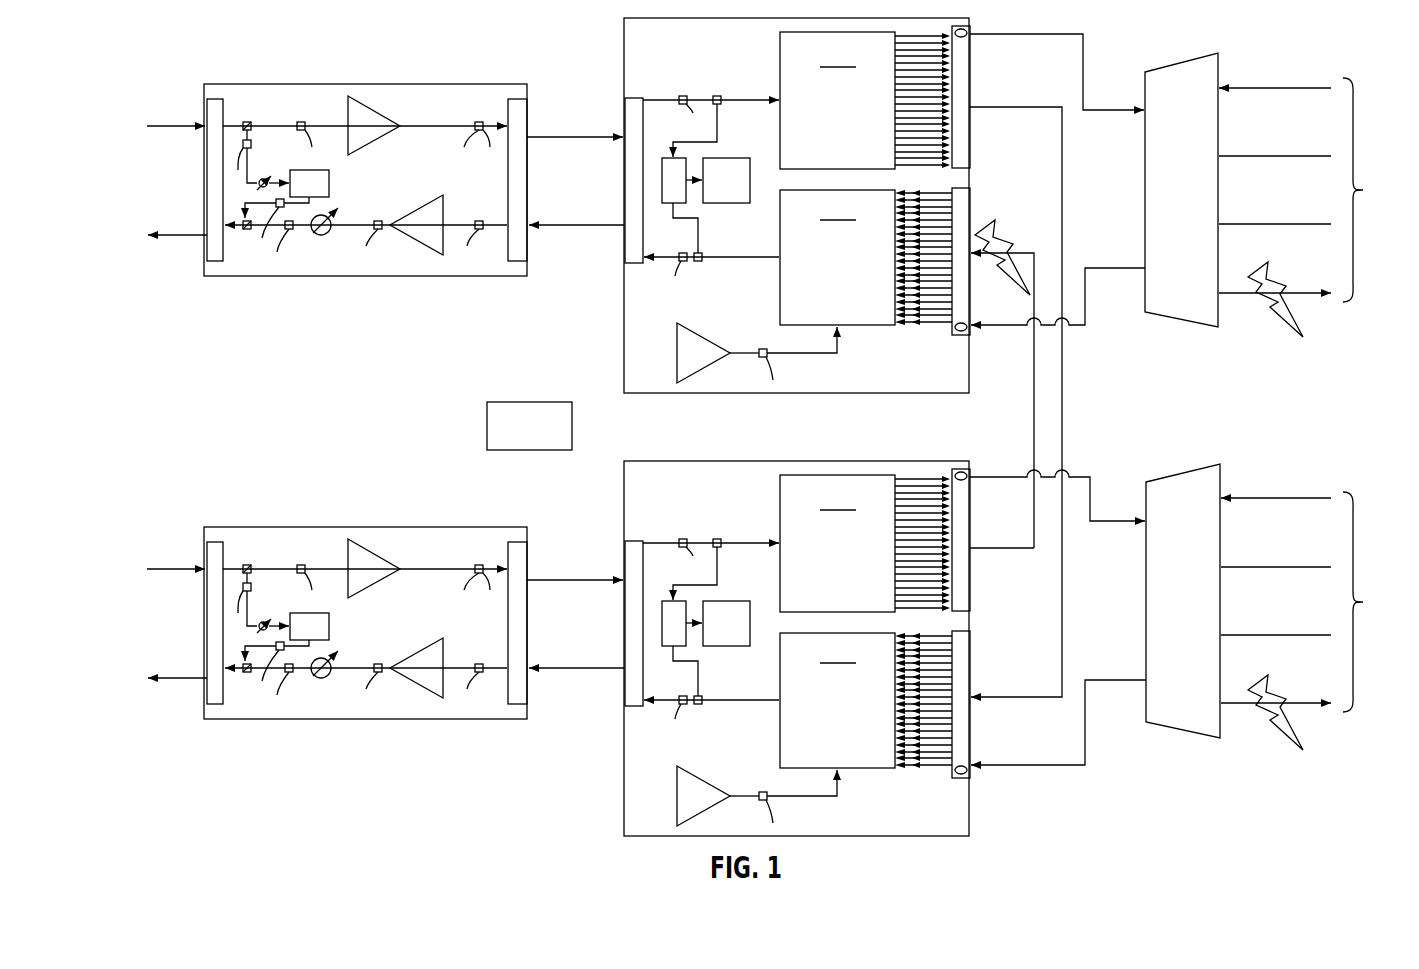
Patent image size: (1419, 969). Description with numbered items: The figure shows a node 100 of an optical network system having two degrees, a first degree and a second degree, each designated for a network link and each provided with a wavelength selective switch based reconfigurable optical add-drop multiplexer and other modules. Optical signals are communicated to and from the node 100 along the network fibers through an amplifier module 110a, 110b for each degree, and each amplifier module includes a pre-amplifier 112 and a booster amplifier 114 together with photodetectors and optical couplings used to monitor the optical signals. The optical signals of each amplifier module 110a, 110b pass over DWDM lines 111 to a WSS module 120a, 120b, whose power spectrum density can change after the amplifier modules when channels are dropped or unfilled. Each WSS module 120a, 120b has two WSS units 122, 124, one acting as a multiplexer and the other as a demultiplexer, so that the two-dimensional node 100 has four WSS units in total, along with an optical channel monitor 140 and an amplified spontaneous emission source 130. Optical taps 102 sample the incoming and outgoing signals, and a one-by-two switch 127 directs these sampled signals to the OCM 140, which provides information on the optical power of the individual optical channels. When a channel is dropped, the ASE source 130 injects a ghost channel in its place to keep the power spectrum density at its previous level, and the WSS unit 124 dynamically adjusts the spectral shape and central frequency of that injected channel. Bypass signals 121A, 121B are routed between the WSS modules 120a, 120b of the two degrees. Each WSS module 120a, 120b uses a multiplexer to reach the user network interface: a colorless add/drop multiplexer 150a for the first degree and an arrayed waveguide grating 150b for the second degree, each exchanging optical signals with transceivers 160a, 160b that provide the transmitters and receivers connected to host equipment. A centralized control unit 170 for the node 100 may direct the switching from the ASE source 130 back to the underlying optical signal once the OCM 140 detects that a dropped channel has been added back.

The node 100 is at (228, 784).
The amplifier module 110a is at (302, 84).
The amplifier module 110b is at (302, 527).
The DWDM lines 111 is at (582, 132).
The pre-amplifier 112 is at (366, 146).
The booster amplifier 114 is at (418, 244).
The WSS module 120a is at (623, 50).
The WSS module 120b is at (623, 493).
The optical tap 102 is at (717, 95).
The WSS unit 122 is at (865, 322).
The WSS unit 124 is at (866, 479).
The 1×2 switch 127 is at (661, 175).
The ASE source 130 is at (676, 362).
The OCM 140 is at (736, 157).
The bypass signal 121A is at (1028, 402).
The bypass signal 121B is at (1002, 384).
The colorless add/drop multiplexer 150a is at (1183, 60).
The arrayed waveguide grating 150b is at (1176, 466).
The transceivers 160a is at (1380, 158).
The transceivers 160b is at (1378, 566).
The control unit 170 is at (487, 425).